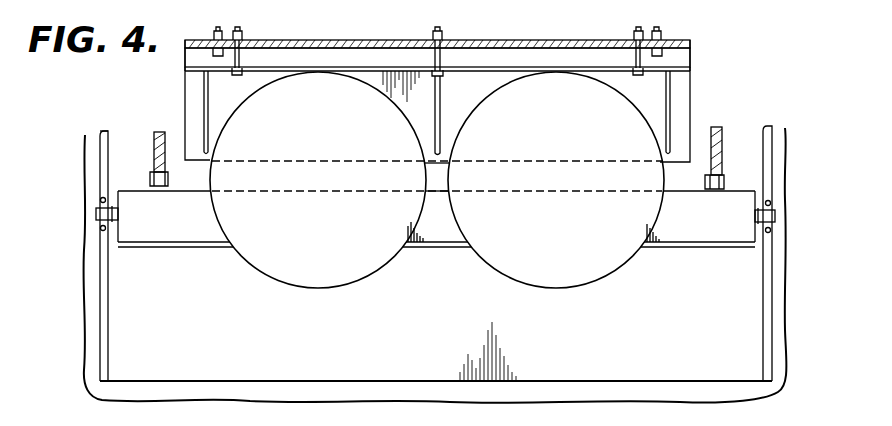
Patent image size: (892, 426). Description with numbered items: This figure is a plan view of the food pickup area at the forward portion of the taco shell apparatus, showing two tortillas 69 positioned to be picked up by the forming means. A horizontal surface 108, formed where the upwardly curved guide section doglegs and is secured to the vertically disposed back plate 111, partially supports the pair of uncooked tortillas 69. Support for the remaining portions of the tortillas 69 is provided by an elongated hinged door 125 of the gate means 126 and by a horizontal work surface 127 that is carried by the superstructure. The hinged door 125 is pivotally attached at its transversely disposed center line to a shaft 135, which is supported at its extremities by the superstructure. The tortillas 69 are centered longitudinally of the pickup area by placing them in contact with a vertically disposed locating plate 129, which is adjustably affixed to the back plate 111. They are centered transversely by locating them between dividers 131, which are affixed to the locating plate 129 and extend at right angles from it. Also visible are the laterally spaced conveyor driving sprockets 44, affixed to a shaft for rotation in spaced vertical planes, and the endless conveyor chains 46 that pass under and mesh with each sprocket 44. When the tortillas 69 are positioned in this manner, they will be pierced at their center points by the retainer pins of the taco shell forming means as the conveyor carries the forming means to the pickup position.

The conveyor driving sprocket 44 is at (173, 120).
The conveyor chain 46 is at (150, 178).
The tortilla 69 is at (360, 270).
The horizontal surface 108 is at (685, 110).
The back plate 111 is at (472, 42).
The hinged door 125 is at (708, 220).
The gate means 126 is at (67, 250).
The horizontal work surface 127 is at (742, 350).
The locating plate 129 is at (275, 67).
The divider 131 is at (205, 89).
The shaft 135 is at (775, 218).